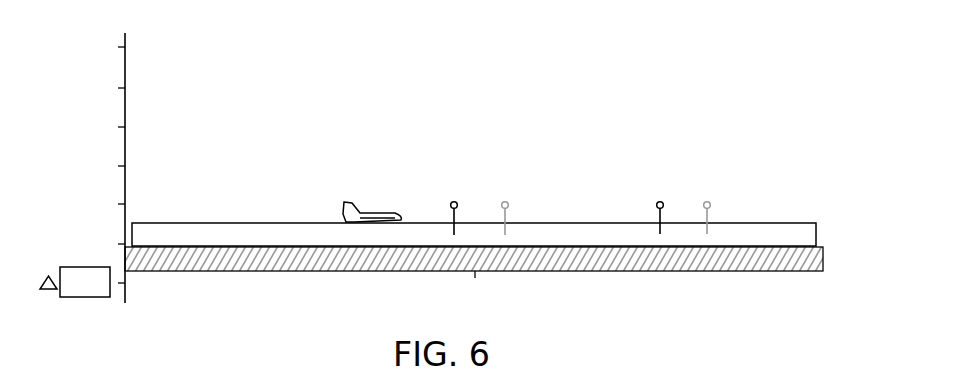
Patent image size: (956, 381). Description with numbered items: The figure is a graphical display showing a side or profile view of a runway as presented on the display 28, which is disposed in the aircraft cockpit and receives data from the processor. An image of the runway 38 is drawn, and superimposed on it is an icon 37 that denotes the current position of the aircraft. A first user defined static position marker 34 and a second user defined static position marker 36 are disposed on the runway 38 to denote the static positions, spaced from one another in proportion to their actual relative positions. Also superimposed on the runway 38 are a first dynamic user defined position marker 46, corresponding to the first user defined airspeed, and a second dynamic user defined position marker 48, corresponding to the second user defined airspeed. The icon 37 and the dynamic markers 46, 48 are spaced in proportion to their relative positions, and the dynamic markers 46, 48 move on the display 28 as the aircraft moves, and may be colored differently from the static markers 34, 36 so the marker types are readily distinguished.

The display 28 is at (576, 96).
The first user defined static position marker 34 is at (450, 207).
The second user defined static position marker 36 is at (657, 205).
The icon 37 is at (375, 213).
The runway 38 is at (817, 234).
The first dynamic user defined position marker 46 is at (501, 209).
The second dynamic user defined position marker 48 is at (703, 209).